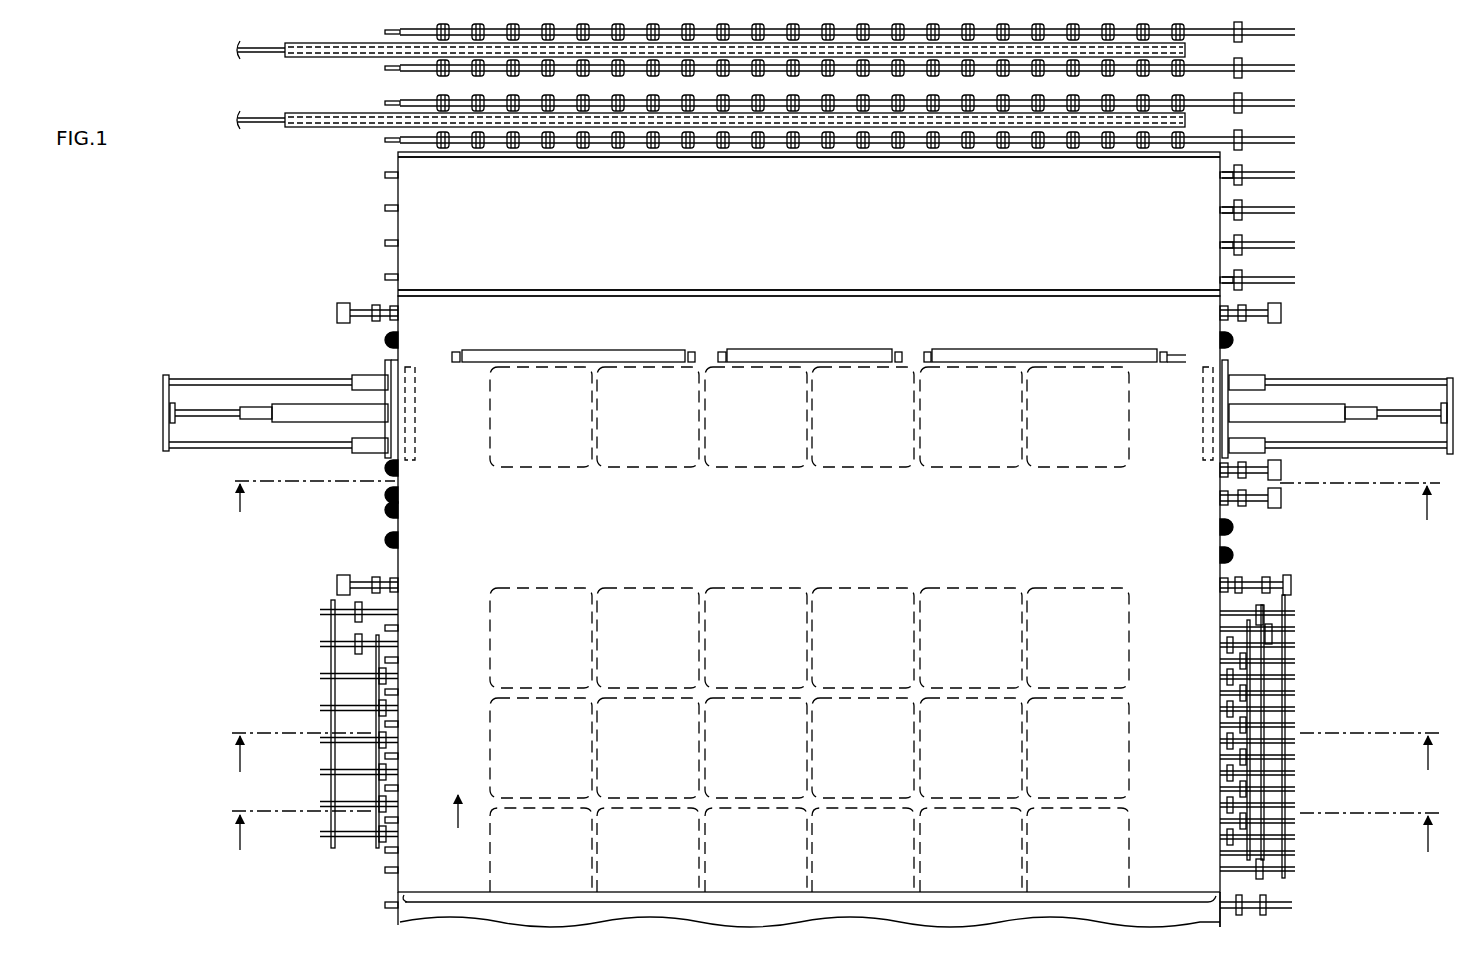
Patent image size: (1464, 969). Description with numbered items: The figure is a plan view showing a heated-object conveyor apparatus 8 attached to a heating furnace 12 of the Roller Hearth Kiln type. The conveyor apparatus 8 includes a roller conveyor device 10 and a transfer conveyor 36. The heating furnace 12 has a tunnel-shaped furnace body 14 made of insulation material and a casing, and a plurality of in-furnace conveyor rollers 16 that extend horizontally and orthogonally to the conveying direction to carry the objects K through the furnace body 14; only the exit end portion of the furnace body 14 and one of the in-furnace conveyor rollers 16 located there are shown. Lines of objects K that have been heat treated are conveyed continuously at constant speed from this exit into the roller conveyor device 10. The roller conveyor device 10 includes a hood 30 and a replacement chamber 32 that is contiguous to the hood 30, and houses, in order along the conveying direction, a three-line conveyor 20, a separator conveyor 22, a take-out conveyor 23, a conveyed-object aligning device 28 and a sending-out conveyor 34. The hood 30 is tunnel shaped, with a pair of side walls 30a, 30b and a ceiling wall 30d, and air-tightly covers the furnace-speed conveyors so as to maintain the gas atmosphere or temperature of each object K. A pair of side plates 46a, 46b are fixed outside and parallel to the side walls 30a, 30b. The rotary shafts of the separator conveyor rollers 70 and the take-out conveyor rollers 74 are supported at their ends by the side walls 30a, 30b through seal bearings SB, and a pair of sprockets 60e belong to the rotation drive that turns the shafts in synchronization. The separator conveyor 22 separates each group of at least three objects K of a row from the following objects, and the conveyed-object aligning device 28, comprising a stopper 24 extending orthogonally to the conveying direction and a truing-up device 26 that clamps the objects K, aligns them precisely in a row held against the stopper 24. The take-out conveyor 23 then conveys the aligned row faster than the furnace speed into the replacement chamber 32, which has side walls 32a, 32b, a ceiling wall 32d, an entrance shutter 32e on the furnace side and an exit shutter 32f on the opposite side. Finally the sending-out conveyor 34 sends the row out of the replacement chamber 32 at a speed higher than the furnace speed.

The heated-object conveyor apparatus 8 is at (736, 156).
The roller conveyor device 10 is at (1357, 90).
The heating furnace 12 is at (1228, 925).
The furnace body 14 is at (396, 922).
The in-furnace conveyor roller 16 is at (1292, 906).
The three-line conveyor 20 is at (160, 858).
The separator conveyor 22 is at (160, 488).
The take-out conveyor 23 is at (160, 480).
The stopper 24 is at (462, 352).
The truing-up device 26 is at (323, 367).
The conveyed-object aligning device 28 is at (280, 377).
The hood 30 is at (506, 539).
The side wall 30a is at (1225, 548).
The side wall 30b is at (398, 542).
The ceiling wall 30d is at (440, 510).
The replacement chamber 32 is at (506, 238).
The side wall 32a is at (1224, 238).
The side wall 32b is at (398, 227).
The ceiling wall 32d is at (418, 197).
The entrance shutter 32e is at (812, 290).
The exit shutter 32f is at (768, 158).
The sending-out conveyor 34 is at (1315, 27).
The transfer conveyor 36 is at (250, 152).
The side plate 46a is at (1284, 875).
The side plate 46b is at (333, 848).
The sprocket 60e is at (1294, 743).
The separator conveyor roller 70 is at (1293, 498).
The take-out conveyor roller 74 is at (1292, 321).
The seal bearing SB is at (388, 467).
The object K is at (535, 467).